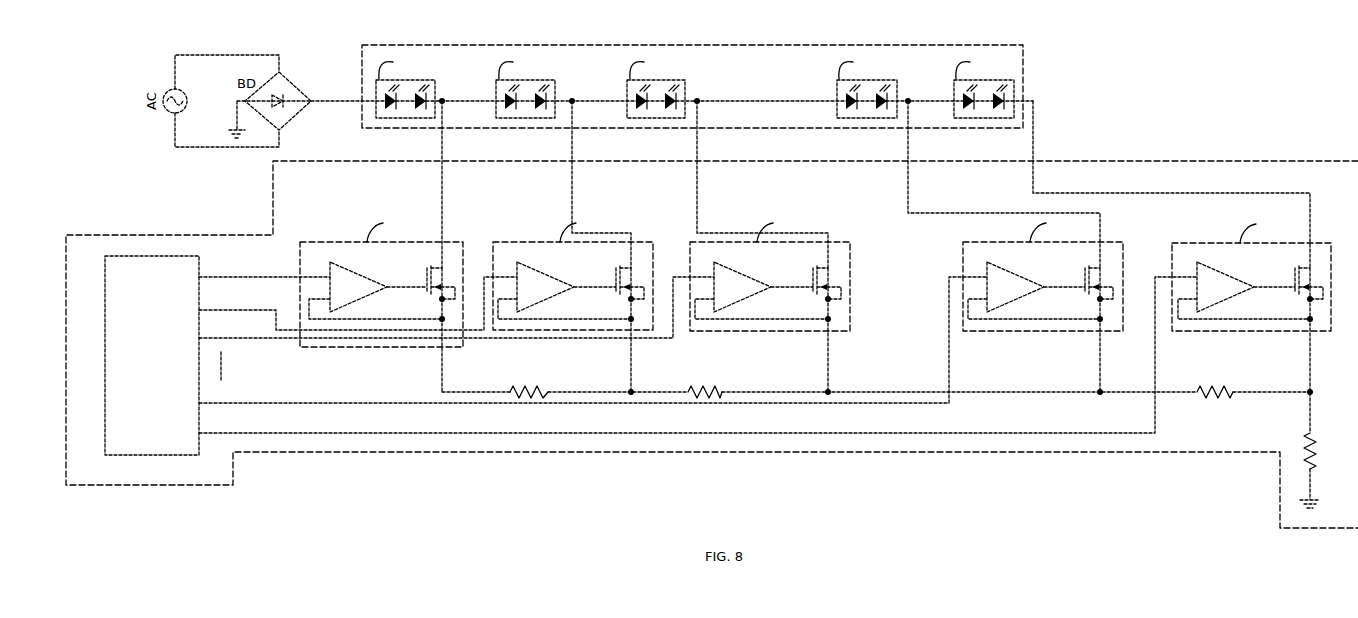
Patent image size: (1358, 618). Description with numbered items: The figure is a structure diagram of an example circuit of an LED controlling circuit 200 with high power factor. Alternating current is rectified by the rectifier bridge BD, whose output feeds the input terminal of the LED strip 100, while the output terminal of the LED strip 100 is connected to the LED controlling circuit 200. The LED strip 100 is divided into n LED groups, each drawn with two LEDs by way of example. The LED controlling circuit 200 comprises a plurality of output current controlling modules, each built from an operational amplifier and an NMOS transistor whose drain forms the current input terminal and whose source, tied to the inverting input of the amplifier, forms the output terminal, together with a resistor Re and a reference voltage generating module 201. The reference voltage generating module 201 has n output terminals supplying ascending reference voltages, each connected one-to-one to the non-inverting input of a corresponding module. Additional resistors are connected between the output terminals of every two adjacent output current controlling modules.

The LED strip 100 is at (867, 45).
The LED controlling circuit 200 is at (1073, 161).
The reference voltage generating module 201 is at (105, 351).